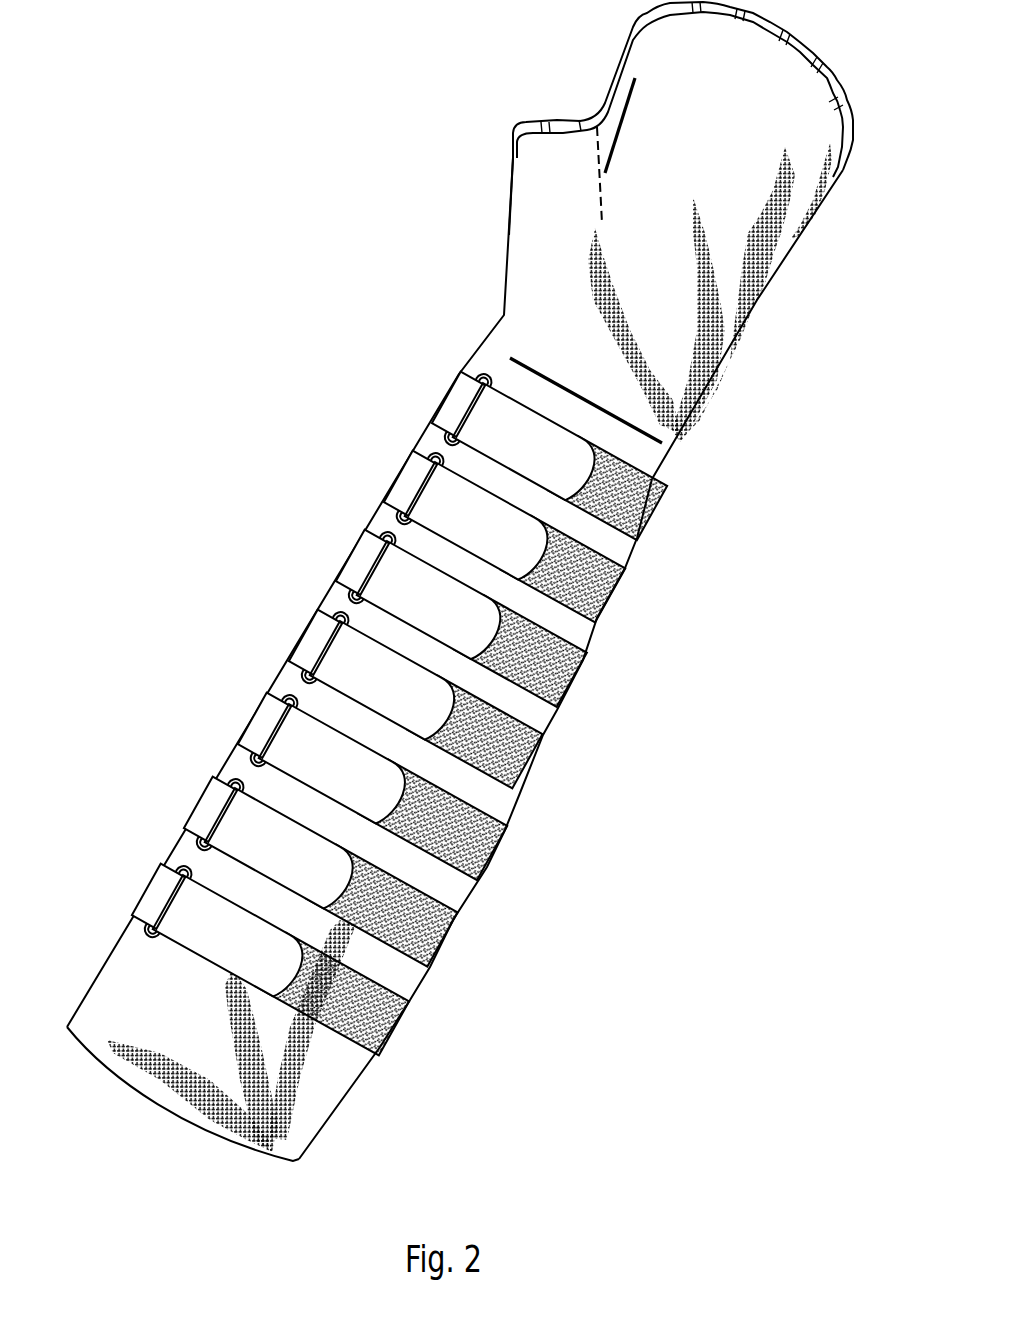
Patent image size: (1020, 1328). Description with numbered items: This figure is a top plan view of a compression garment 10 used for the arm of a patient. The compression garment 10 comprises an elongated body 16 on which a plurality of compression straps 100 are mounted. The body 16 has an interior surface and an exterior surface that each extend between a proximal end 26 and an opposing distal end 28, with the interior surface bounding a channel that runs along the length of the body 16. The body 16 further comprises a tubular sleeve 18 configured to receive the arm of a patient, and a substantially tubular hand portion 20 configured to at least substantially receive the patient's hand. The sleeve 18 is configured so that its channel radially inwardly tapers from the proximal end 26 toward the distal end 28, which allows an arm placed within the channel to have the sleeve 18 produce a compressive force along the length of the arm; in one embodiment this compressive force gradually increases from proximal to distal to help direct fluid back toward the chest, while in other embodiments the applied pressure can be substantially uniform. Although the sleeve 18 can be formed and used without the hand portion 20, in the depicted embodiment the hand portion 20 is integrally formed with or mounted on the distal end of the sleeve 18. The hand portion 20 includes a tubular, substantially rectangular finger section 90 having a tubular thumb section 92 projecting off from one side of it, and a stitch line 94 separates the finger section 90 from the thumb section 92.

The compression garment 10 is at (458, 581).
The elongated body 16 is at (500, 713).
The tubular sleeve 18 is at (613, 545).
The hand portion 20 is at (458, 581).
The proximal end 26 is at (118, 879).
The distal end 28 is at (451, 179).
The finger section 90 is at (747, 180).
The thumb section 92 is at (522, 222).
The stitch line 94 is at (598, 157).
The compression straps 100 is at (520, 758).